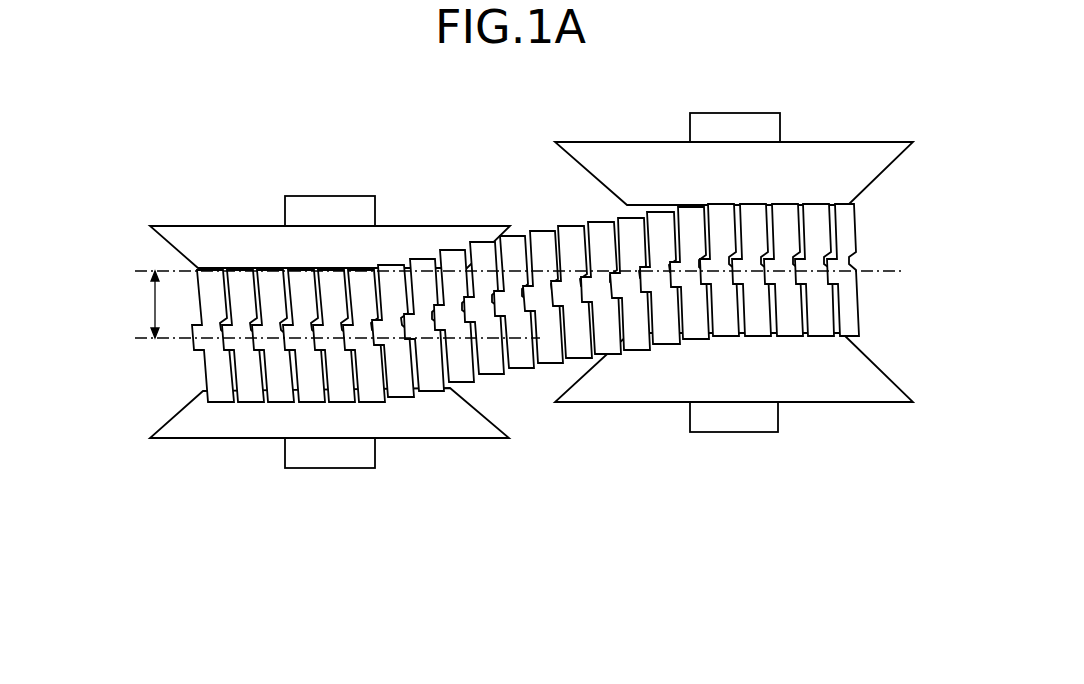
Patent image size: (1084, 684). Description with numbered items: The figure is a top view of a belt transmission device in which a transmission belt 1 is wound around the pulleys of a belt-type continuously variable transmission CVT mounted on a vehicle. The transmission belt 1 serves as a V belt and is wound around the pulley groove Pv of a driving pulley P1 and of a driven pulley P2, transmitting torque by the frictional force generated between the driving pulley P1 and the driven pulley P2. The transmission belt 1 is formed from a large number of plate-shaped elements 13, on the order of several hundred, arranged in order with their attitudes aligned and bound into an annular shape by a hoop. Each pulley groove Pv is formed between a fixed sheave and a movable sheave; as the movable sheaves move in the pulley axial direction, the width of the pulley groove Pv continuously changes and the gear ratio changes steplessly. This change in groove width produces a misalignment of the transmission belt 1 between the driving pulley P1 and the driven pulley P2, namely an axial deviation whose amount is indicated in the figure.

The transmission belt 1 is at (525, 339).
The elements 13 is at (608, 343).
The driving pulley P1 is at (193, 425).
The driven pulley P2 is at (852, 387).
The pulley groove Pv is at (172, 348).
The belt-type continuously variable transmission CVT is at (498, 346).